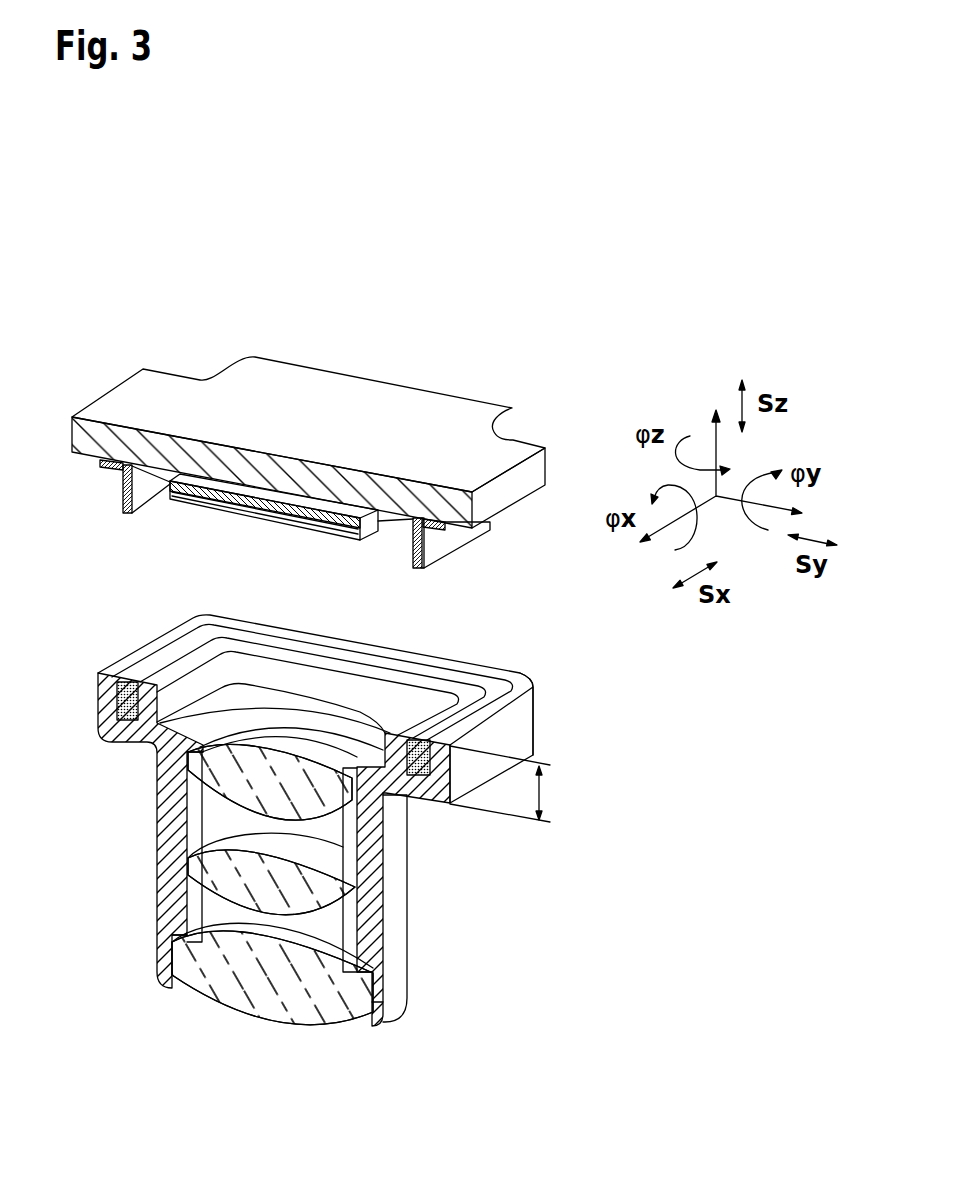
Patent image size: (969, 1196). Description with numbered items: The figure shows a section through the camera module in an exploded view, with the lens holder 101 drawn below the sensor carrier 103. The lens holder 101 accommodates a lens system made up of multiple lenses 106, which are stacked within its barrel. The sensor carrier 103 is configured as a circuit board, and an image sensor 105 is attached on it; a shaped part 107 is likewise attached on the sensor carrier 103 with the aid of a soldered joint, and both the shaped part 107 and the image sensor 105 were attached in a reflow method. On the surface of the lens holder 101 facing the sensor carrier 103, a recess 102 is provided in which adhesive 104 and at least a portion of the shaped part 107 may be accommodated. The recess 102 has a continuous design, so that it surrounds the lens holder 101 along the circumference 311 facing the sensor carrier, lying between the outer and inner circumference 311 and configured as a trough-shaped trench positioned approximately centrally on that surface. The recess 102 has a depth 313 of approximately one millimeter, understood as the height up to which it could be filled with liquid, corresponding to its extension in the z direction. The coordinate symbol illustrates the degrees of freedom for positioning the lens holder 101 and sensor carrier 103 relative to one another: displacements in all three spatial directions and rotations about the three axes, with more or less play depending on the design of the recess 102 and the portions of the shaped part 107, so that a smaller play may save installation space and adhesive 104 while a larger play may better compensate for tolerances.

The lens holder 101 is at (375, 917).
The recess 102 is at (102, 717).
The sensor carrier 103 is at (402, 402).
The adhesive 104 is at (117, 688).
The image sensor 105 is at (209, 503).
The lenses 106 is at (220, 767).
The shaped part 107 is at (123, 497).
The circumference 311 is at (500, 718).
The depth 313 is at (543, 790).